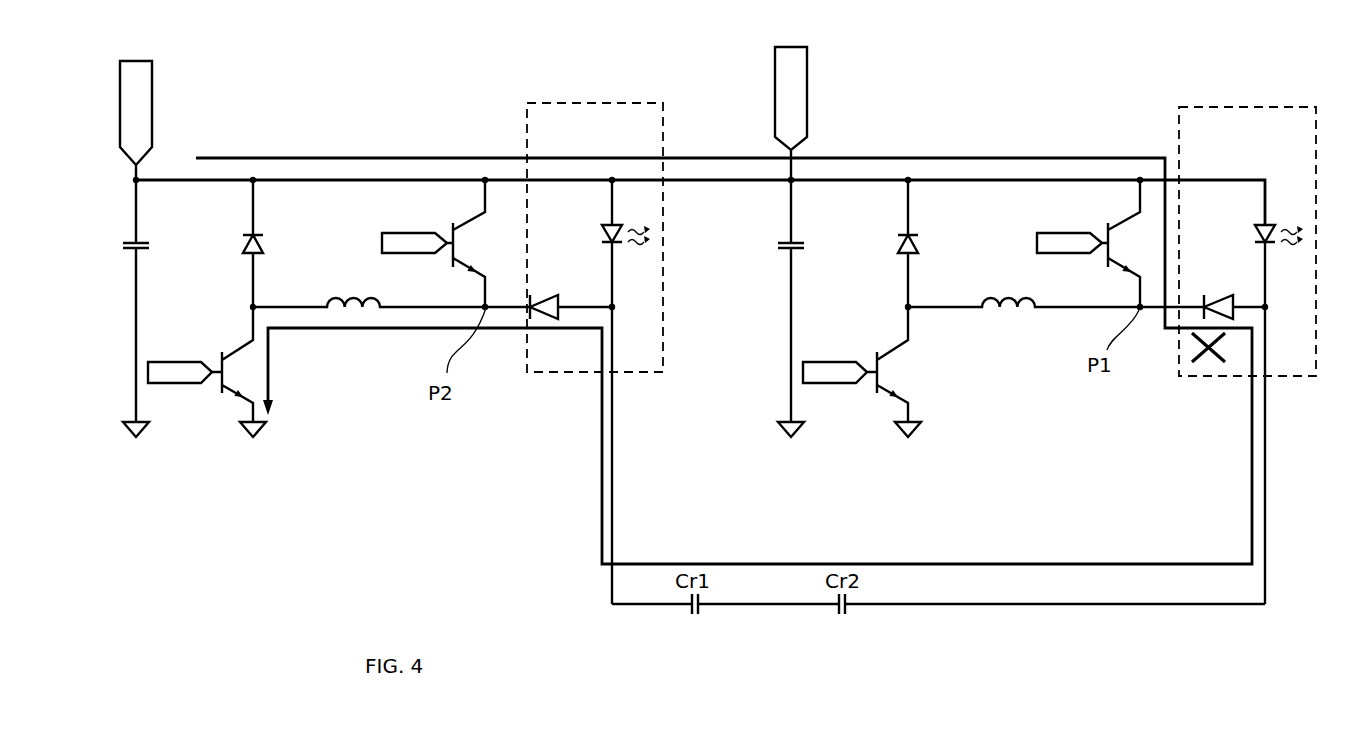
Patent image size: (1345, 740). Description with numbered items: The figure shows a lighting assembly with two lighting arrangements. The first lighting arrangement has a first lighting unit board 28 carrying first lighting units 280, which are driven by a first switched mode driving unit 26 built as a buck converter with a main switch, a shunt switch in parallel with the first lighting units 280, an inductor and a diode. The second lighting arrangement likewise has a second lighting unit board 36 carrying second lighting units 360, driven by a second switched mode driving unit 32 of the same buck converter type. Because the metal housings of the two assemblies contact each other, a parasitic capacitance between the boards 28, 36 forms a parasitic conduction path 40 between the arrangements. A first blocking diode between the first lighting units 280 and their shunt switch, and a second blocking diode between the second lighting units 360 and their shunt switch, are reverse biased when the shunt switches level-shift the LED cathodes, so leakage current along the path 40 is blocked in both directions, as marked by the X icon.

The first switched mode driving unit 26 is at (515, 150).
The first lighting unit board 28 is at (657, 103).
The second switched mode driving unit 32 is at (1192, 158).
The second lighting unit board 36 is at (1200, 107).
The parasitic conduction path 40 is at (1035, 564).
The first lighting units 280 is at (618, 244).
The second lighting units 360 is at (1258, 241).